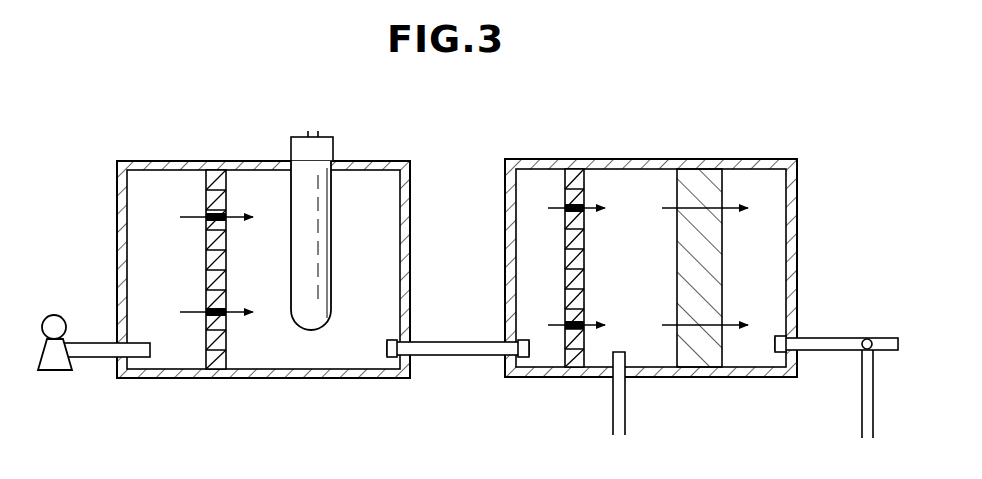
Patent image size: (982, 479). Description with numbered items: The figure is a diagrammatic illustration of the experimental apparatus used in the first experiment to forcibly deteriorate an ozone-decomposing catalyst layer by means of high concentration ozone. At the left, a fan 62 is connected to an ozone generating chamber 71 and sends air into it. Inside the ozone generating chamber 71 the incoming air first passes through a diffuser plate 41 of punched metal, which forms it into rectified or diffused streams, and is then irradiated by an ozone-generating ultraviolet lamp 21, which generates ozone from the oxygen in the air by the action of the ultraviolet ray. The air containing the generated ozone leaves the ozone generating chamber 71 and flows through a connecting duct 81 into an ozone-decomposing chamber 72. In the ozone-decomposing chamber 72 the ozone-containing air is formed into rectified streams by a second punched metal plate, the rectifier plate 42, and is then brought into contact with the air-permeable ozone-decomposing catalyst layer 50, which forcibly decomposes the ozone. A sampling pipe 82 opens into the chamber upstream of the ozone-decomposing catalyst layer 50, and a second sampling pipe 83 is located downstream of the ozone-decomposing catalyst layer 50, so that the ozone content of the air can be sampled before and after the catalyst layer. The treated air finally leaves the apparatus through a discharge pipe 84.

The ozone-generating ultraviolet lamp 21 is at (333, 152).
The diffuser plate 41 is at (210, 174).
The rectifier plate 42 is at (566, 165).
The ozone-decomposing catalyst layer 50 is at (695, 170).
The fan 62 is at (54, 315).
The ozone generating chamber 71 is at (253, 378).
The ozone-decomposing chamber 72 is at (645, 160).
The connecting duct 81 is at (455, 356).
The sampling pipe 82 is at (625, 405).
The sampling pipe 83 is at (862, 408).
The discharge pipe 84 is at (868, 338).